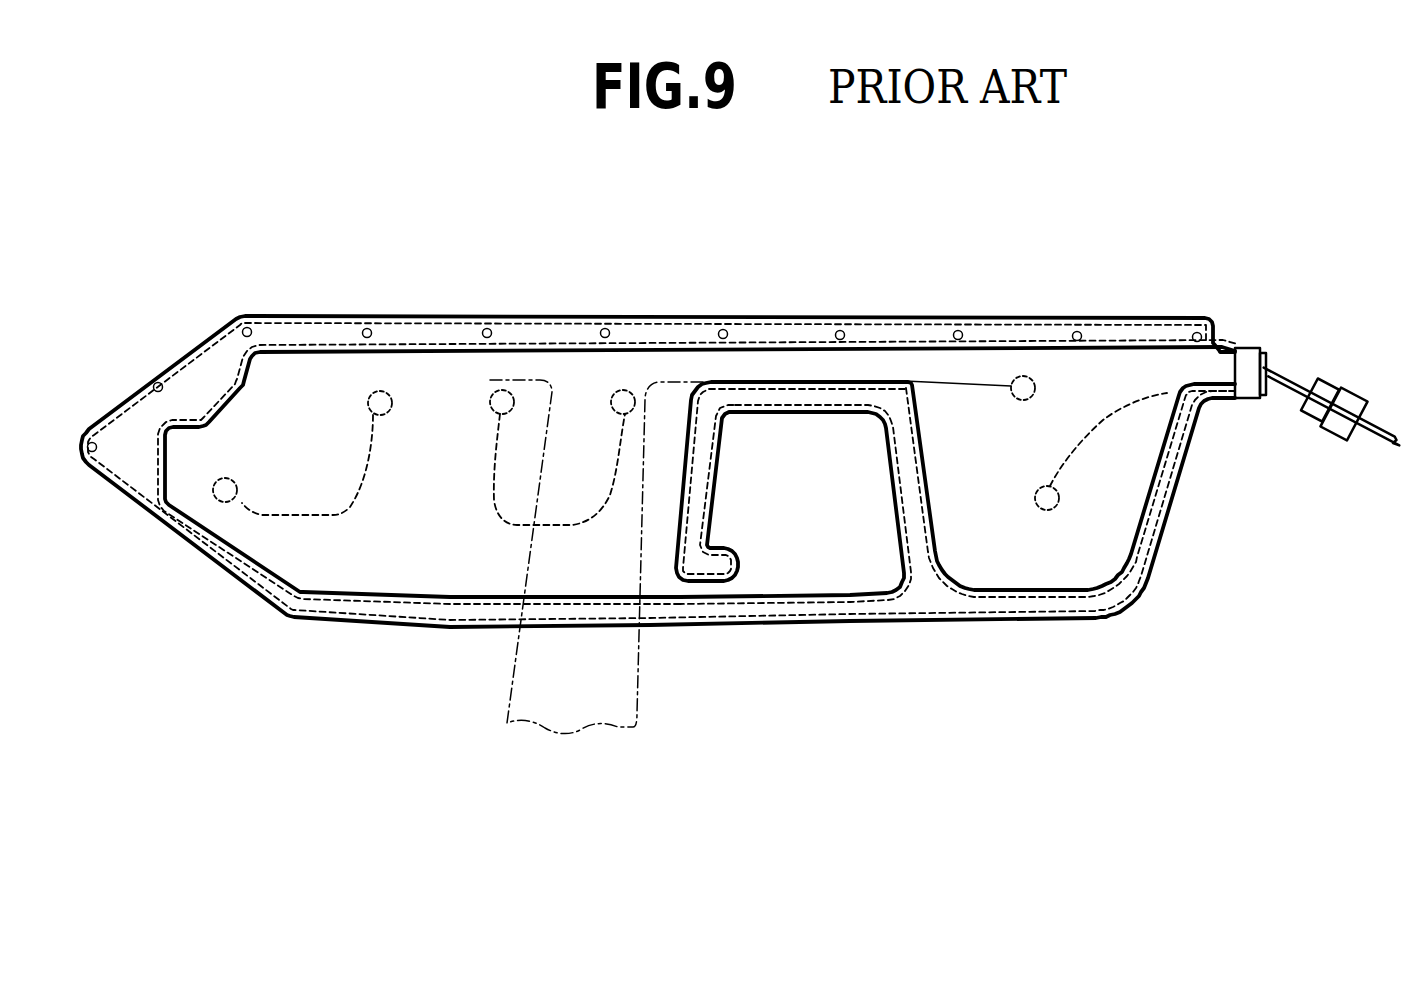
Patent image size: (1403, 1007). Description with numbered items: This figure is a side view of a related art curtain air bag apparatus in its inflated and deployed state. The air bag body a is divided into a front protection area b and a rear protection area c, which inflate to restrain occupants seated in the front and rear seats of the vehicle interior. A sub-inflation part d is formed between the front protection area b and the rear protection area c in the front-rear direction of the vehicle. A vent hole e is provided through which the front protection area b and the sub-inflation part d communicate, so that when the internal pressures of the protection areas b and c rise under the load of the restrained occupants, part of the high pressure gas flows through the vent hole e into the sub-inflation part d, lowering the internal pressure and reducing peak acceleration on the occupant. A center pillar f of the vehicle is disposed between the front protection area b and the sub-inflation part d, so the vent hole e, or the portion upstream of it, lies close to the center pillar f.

The air bag body a is at (214, 622).
The front protection area b is at (435, 410).
The rear protection area c is at (975, 430).
The sub-inflation part d is at (810, 512).
The vent hole e is at (700, 583).
The center pillar f is at (512, 680).